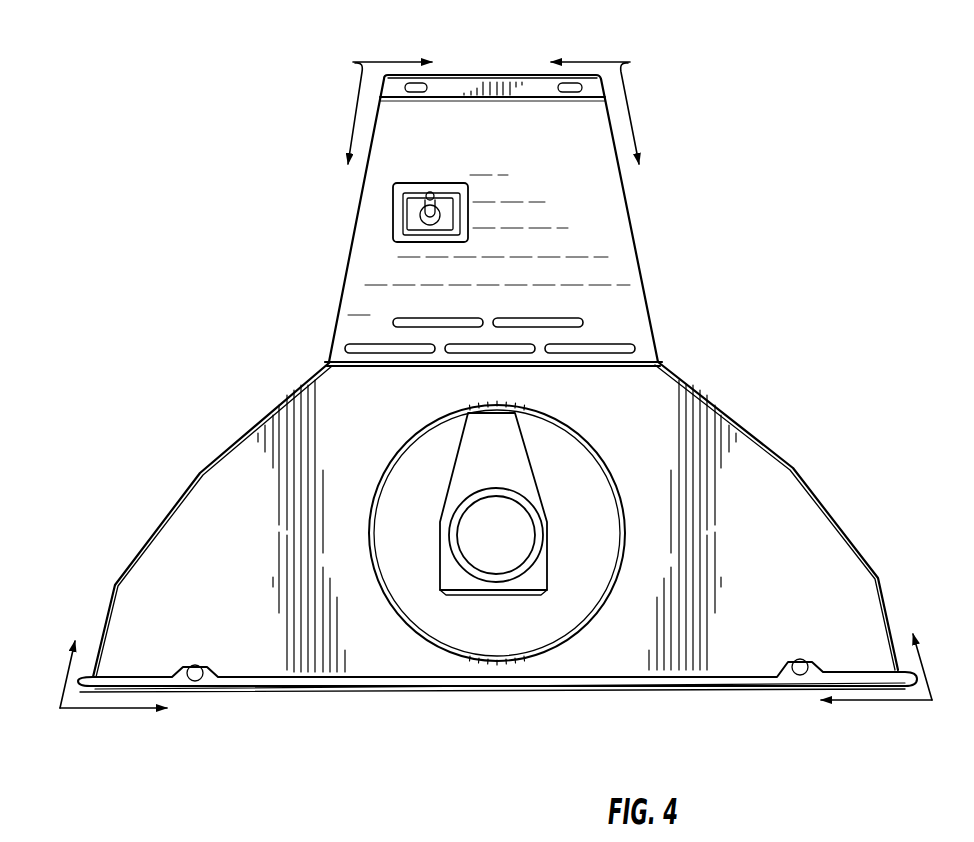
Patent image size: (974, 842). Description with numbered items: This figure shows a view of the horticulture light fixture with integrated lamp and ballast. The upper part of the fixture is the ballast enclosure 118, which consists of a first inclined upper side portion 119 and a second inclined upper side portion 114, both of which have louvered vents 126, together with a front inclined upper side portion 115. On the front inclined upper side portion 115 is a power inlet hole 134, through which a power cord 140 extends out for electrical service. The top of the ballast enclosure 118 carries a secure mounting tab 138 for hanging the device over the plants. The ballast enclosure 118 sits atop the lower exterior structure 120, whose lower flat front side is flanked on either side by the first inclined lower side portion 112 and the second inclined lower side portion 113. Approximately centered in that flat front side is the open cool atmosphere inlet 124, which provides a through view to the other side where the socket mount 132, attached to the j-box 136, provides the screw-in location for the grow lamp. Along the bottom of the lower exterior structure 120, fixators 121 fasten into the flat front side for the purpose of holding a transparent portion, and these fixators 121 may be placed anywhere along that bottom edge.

The first inclined lower side portion 112 is at (778, 453).
The second inclined lower side portion 113 is at (205, 468).
The second inclined upper side portion 114 is at (340, 285).
The front inclined upper side portion 115 is at (596, 222).
The ballast enclosure 118 is at (492, 94).
The first inclined upper side portion 119 is at (632, 210).
The lower exterior structure 120 is at (490, 685).
The fixators 121 is at (800, 676).
The cool atmosphere inlet 124 is at (445, 650).
The louvered vents 126 is at (635, 348).
The socket mount 132 is at (493, 582).
The power inlet hole 134 is at (467, 207).
The j-box 136 is at (493, 450).
The secure mounting tab 138 is at (464, 84).
The power cord 140 is at (430, 192).